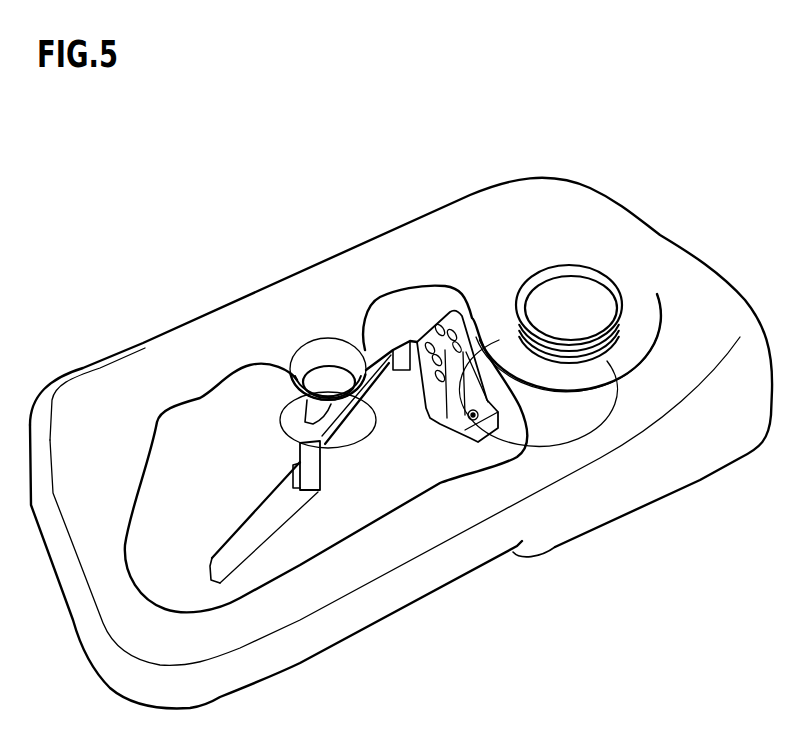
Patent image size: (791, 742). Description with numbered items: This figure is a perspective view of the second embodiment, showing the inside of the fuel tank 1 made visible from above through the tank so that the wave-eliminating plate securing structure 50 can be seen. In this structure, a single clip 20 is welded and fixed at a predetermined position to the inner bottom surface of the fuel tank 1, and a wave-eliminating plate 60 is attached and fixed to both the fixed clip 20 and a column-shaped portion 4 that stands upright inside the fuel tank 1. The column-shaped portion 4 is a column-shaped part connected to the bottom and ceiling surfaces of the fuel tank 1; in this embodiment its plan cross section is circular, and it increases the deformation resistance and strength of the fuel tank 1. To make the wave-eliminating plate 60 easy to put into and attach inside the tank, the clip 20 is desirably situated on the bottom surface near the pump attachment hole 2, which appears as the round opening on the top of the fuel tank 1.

The fuel tank 1 is at (152, 378).
The pump attachment hole 2 is at (615, 330).
The column-shaped portion 4 is at (317, 358).
The clip 20 is at (493, 433).
The wave-eliminating plate securing structure 50 is at (378, 438).
The wave-eliminating plate 60 is at (277, 498).